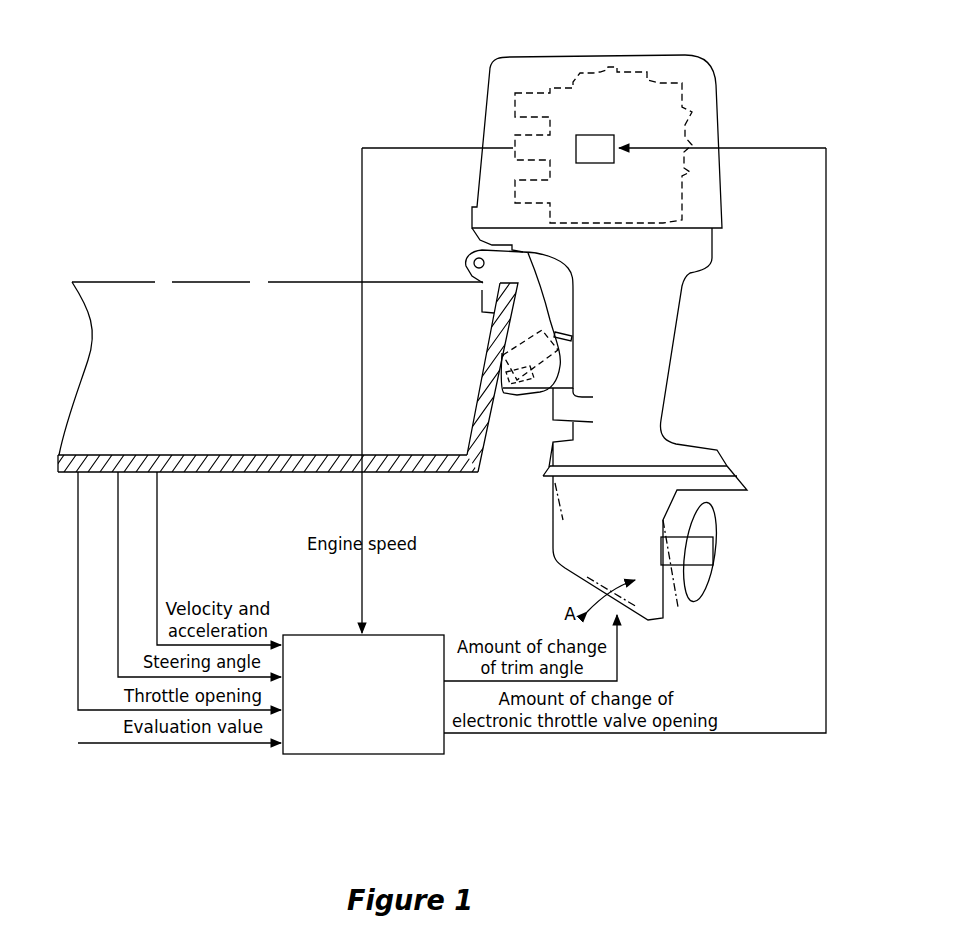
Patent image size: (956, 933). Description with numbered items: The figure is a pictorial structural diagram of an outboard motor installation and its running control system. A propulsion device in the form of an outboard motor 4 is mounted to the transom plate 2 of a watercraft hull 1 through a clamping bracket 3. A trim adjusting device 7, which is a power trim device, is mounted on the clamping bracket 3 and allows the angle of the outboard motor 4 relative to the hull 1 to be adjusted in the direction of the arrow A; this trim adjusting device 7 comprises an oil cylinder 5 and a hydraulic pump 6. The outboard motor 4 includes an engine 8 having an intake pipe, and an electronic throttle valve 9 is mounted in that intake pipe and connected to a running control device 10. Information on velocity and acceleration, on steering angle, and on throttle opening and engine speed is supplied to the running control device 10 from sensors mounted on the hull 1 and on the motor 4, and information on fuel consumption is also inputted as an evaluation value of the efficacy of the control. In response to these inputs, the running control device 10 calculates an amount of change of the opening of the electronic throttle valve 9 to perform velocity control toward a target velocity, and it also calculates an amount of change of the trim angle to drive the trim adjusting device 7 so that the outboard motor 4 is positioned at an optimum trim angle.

The hull 1 is at (208, 375).
The transom plate 2 is at (470, 423).
The clamping bracket 3 is at (495, 280).
The outboard motor 4 is at (732, 57).
The oil cylinder 5 is at (540, 330).
The hydraulic pump 6 is at (534, 370).
The trim adjusting device 7 is at (623, 268).
The engine 8 is at (690, 125).
The electronic throttle valve 9 is at (595, 135).
The running control device 10 is at (367, 754).